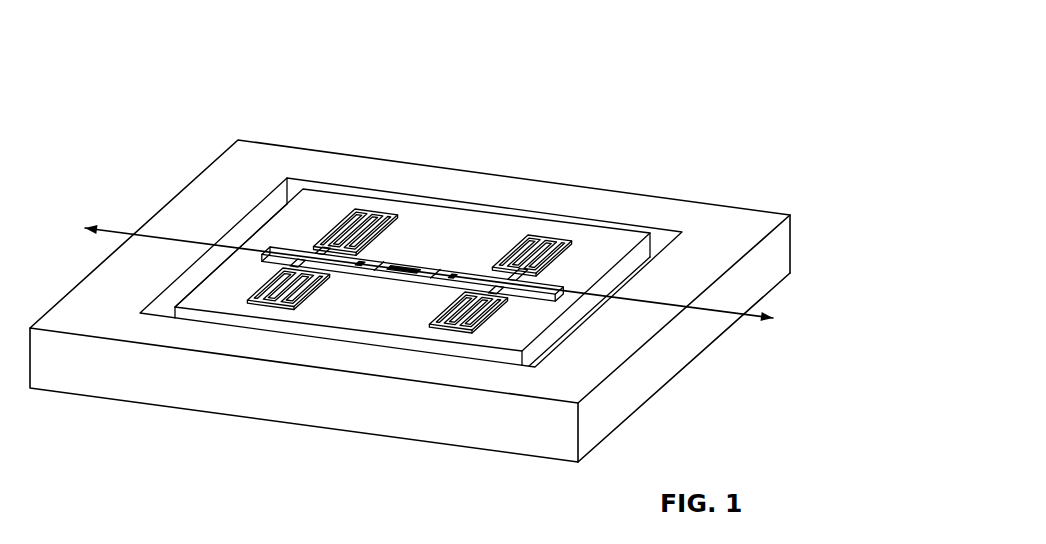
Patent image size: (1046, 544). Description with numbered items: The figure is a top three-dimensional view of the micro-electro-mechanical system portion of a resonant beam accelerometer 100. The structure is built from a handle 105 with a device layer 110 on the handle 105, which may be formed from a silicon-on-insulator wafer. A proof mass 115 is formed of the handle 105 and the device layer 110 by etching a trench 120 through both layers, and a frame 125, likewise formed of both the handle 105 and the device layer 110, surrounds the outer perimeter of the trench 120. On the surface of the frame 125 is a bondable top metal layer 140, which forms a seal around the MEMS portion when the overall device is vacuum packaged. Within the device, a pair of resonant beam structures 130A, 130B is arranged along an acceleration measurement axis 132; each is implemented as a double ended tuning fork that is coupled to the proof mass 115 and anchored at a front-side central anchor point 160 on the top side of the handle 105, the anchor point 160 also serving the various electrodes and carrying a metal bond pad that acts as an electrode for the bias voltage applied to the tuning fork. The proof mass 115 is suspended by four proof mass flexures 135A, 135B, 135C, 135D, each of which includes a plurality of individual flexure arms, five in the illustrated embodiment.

The resonant beam accelerometer 100 is at (546, 58).
The handle 105 is at (456, 334).
The device layer 110 is at (217, 293).
The proof mass 115 is at (602, 243).
The trench 120 is at (474, 250).
The frame 125 is at (847, 211).
The resonant beam structure 130A is at (425, 177).
The resonant beam structure 130B is at (500, 277).
The acceleration measurement axis 132 is at (114, 228).
The proof mass flexure 135A is at (332, 164).
The proof mass flexure 135B is at (561, 215).
The proof mass flexure 135C is at (181, 359).
The proof mass flexure 135D is at (432, 393).
The bondable top metal layer 140 is at (238, 168).
The front-side central anchor point 160 is at (396, 265).